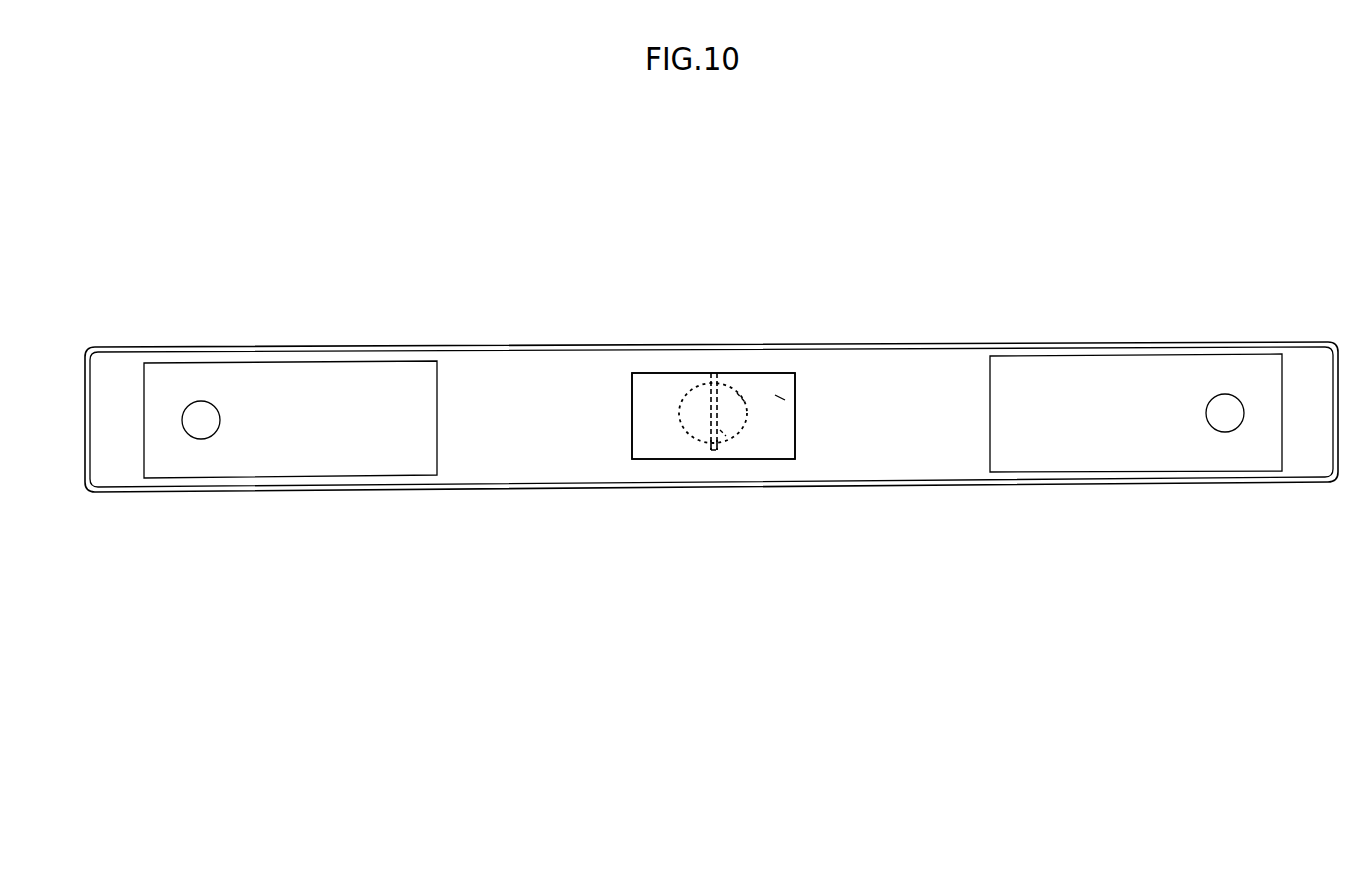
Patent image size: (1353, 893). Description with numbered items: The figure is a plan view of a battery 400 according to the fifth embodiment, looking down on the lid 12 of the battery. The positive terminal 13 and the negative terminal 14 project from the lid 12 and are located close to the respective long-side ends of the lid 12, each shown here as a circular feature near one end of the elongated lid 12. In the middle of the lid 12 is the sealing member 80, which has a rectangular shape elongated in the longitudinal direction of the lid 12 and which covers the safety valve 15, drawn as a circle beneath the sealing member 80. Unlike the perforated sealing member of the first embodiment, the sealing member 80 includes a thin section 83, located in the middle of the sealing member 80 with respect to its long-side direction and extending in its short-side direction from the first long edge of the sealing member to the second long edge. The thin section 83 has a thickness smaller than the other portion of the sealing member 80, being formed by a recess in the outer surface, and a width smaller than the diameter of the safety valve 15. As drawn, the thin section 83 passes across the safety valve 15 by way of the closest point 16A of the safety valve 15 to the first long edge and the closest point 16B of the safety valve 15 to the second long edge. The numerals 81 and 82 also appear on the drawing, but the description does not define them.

The battery 400 is at (732, 239).
The lid 12 is at (917, 366).
The positive terminal 13 is at (1229, 374).
The negative terminal 14 is at (202, 381).
The safety valve 15 is at (737, 393).
The closest point of the safety valve to the first long edge 16A is at (716, 385).
The closest point of the safety valve to the second long edge 16B is at (707, 452).
The sealing member 80 is at (646, 361).
The lens holder 81 is at (691, 400).
The substrate 82 is at (780, 397).
The thin section 83 is at (722, 433).